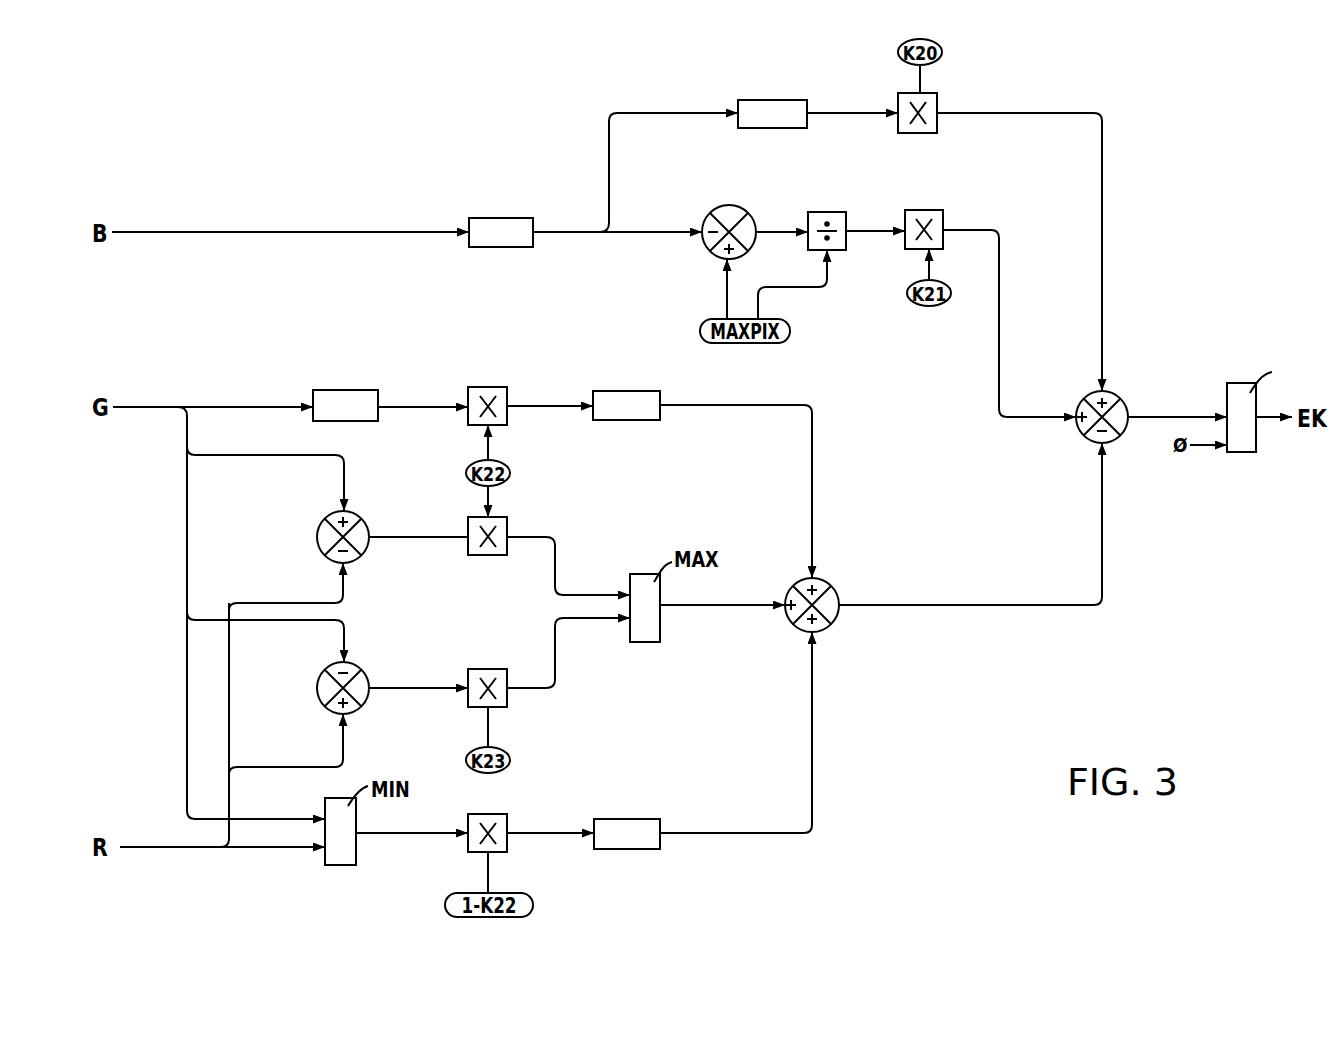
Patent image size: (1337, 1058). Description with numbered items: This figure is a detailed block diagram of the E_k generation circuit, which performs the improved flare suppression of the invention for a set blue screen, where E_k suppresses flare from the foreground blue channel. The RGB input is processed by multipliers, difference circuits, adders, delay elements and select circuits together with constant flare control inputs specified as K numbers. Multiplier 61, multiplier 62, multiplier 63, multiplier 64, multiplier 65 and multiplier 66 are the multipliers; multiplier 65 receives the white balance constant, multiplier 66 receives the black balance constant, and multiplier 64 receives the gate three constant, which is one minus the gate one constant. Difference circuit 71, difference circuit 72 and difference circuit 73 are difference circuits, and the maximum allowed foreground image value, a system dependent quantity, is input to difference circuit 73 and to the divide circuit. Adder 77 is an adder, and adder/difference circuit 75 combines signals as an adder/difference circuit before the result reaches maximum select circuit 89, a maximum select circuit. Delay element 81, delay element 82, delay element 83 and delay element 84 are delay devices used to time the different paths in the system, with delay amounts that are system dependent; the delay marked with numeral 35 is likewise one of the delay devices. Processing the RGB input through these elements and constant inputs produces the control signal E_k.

The delay element 81 is at (529, 247).
The delay element 82 is at (818, 89).
The multiplier 65 is at (937, 133).
The multiplier 66 is at (956, 198).
The difference circuit 73 is at (746, 213).
The delay element 83 is at (378, 390).
The multiplier 61 is at (507, 425).
The delay element 84 is at (660, 420).
The difference circuit 71 is at (360, 519).
The multiplier 62 is at (500, 555).
The difference circuit 72 is at (360, 670).
The multiplier 63 is at (492, 669).
The multiplier 64 is at (507, 814).
The delay D17 35 is at (657, 819).
The adder 77 is at (829, 624).
The adder/difference circuit 75 is at (1085, 436).
The maximum select circuit 89 is at (1247, 452).